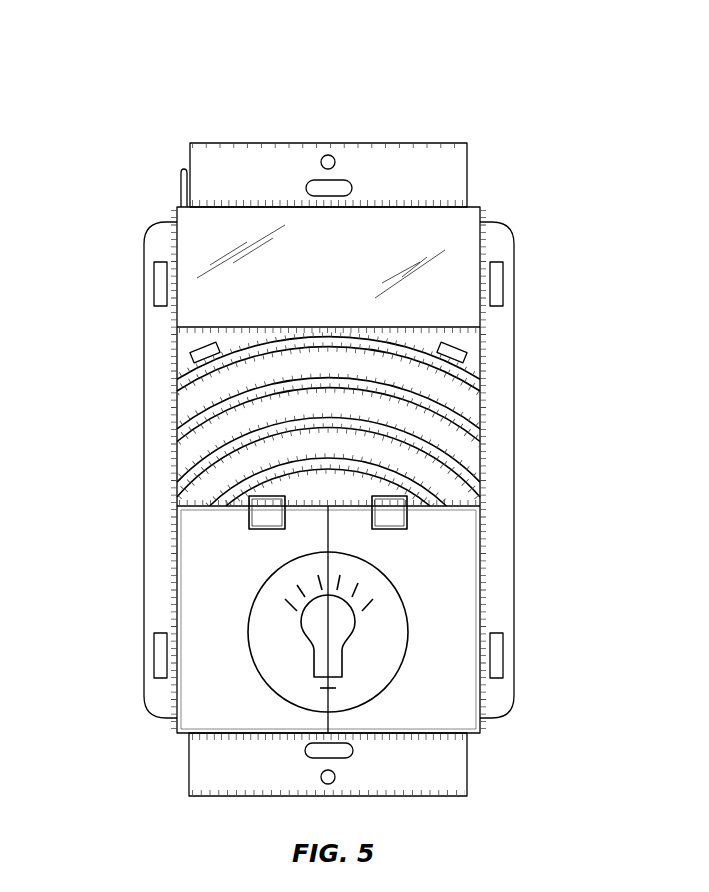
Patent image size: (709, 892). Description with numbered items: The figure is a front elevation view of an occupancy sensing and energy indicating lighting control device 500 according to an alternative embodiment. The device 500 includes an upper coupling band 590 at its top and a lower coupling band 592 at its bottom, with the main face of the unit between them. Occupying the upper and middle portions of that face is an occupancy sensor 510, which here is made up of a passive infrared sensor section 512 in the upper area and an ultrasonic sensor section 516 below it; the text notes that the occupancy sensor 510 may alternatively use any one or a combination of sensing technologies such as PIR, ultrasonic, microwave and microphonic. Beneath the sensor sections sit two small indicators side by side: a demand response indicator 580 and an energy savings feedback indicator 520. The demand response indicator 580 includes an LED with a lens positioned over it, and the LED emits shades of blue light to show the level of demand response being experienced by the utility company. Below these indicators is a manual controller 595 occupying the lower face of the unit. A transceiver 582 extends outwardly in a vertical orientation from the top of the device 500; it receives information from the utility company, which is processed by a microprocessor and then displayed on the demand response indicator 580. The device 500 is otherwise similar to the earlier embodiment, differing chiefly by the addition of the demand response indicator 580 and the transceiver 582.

The occupancy sensing and energy indicating lighting control device 500 is at (566, 82).
The occupancy sensor 510 is at (131, 207).
The passive infrared sensor section 512 is at (468, 212).
The ultrasonic sensor section 516 is at (470, 405).
The energy savings feedback indicator 520 is at (392, 530).
The demand response indicator 580 is at (268, 530).
The transceiver 582 is at (180, 185).
The upper coupling band 590 is at (455, 163).
The lower coupling band 592 is at (462, 765).
The manual controller 595 is at (196, 644).